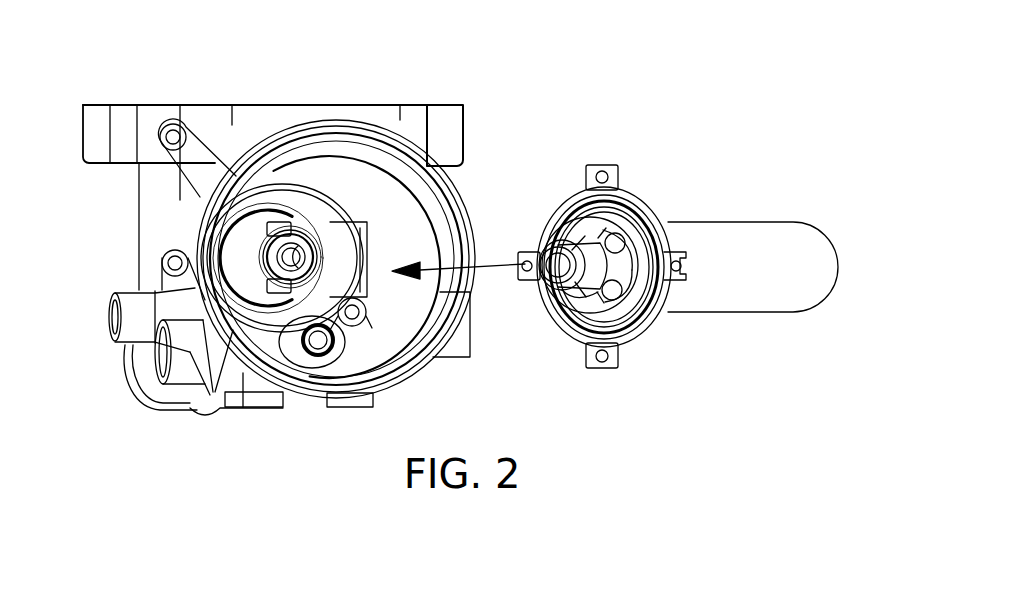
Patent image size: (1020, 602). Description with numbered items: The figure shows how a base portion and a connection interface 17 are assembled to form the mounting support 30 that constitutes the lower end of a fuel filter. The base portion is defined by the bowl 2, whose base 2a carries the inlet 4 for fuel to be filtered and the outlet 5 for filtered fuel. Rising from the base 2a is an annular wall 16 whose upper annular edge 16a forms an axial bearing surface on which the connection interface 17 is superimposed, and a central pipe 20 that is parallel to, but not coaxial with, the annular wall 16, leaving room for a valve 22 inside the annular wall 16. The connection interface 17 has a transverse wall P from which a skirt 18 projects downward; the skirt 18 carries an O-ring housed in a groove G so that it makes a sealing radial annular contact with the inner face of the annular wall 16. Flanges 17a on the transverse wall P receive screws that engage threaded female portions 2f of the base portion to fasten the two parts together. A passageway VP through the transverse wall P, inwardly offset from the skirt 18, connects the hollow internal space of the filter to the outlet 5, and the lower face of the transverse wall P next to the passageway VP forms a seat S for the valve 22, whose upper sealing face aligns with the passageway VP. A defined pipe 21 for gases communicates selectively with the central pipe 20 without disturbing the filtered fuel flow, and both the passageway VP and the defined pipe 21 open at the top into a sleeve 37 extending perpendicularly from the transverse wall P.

The mounting support 30 is at (440, 92).
The bowl 2 is at (203, 222).
The base 2a is at (242, 208).
The female portion 2f is at (355, 325).
The valve 22 is at (245, 262).
The annular wall 16 is at (307, 188).
The upper annular edge 16a is at (282, 180).
The central pipe 20 is at (312, 238).
The inlet 4 is at (108, 322).
The outlet 5 is at (256, 408).
The connection interface 17 is at (688, 203).
The flange 17a is at (598, 366).
The skirt 18 is at (637, 322).
The defined pipe 21 is at (587, 284).
The transverse wall P is at (575, 232).
The seat S is at (592, 237).
The passageway VP is at (612, 236).
The groove G is at (642, 222).
The sleeve 37 is at (767, 314).